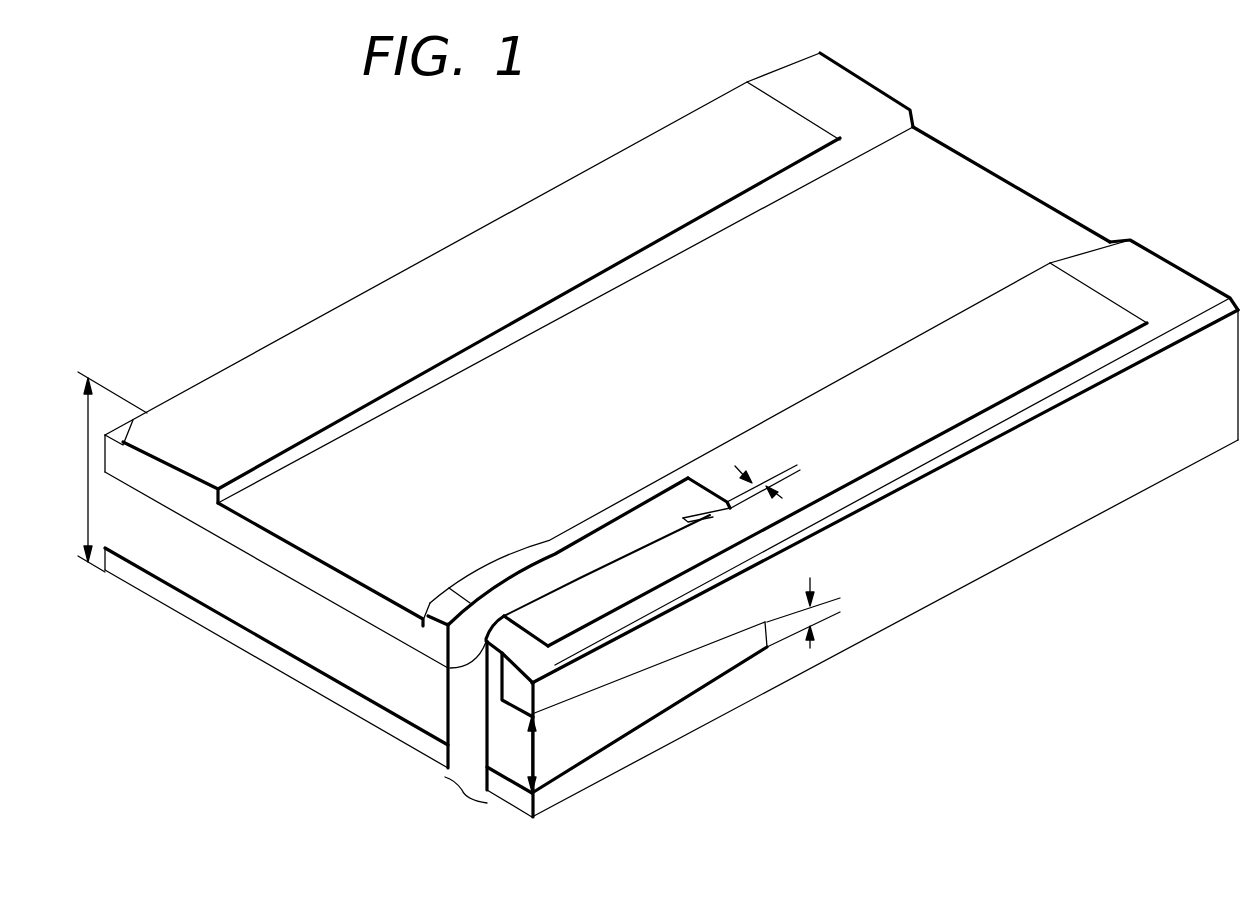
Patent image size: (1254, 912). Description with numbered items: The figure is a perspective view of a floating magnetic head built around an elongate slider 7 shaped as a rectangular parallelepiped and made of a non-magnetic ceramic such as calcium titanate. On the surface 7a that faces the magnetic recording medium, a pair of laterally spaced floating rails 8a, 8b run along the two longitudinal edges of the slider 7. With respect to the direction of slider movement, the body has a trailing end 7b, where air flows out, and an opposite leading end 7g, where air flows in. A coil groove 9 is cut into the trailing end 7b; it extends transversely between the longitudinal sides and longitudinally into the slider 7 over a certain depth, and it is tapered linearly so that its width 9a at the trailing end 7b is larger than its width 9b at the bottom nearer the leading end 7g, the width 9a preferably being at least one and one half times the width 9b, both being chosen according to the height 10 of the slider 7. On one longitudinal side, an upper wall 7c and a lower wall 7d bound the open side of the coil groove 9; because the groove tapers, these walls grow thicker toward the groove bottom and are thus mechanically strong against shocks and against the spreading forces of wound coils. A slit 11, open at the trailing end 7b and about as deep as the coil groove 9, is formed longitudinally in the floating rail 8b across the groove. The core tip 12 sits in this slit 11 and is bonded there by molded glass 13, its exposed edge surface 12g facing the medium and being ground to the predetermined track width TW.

The slider 7 is at (1088, 220).
The surface 7a is at (967, 188).
The trailing end 7b is at (275, 650).
The upper wall 7c is at (613, 657).
The lower wall 7d is at (713, 707).
The leading end 7g is at (1040, 200).
The floating rail 8a is at (752, 108).
The floating rail 8b is at (1097, 312).
The coil groove 9 is at (213, 598).
The width 9a is at (537, 757).
The width 9b is at (807, 612).
The height 10 is at (106, 472).
The slit 11 is at (455, 800).
The core tip 12 is at (445, 755).
The edge surface 12g is at (580, 573).
The molded glass 13 is at (647, 520).
The track width TW is at (763, 469).